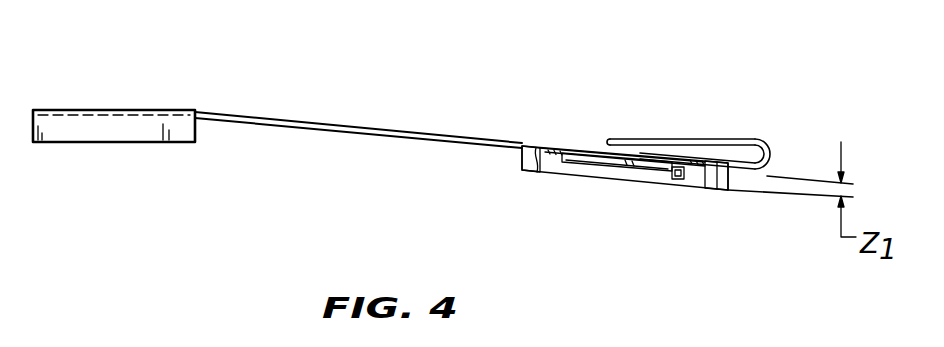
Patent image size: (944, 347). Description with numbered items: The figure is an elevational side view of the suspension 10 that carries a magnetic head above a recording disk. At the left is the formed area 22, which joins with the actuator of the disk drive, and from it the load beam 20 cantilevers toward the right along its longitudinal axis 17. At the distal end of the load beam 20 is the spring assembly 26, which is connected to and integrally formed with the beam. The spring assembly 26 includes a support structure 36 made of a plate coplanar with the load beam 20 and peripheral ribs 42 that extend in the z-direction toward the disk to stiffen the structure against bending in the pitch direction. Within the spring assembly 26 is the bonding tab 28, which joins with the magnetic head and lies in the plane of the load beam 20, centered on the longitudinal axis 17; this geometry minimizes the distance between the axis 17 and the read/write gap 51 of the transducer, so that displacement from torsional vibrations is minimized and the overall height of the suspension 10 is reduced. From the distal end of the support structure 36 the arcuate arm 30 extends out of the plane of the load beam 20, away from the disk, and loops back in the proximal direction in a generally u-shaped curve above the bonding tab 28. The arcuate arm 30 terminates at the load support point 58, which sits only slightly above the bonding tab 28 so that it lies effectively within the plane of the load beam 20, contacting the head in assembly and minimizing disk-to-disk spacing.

The suspension 10 is at (390, 108).
The formed area 22 is at (147, 108).
The load beam 20 is at (300, 132).
The spring assembly 26 is at (767, 255).
The support structure 36 is at (558, 133).
The bonding tab 28 is at (594, 147).
The load support point 58 is at (620, 143).
The arcuate arm 30 is at (769, 140).
The read/write gap 51 is at (677, 183).
The peripheral ribs 42 is at (718, 190).
The longitudinal axis 17 is at (790, 175).